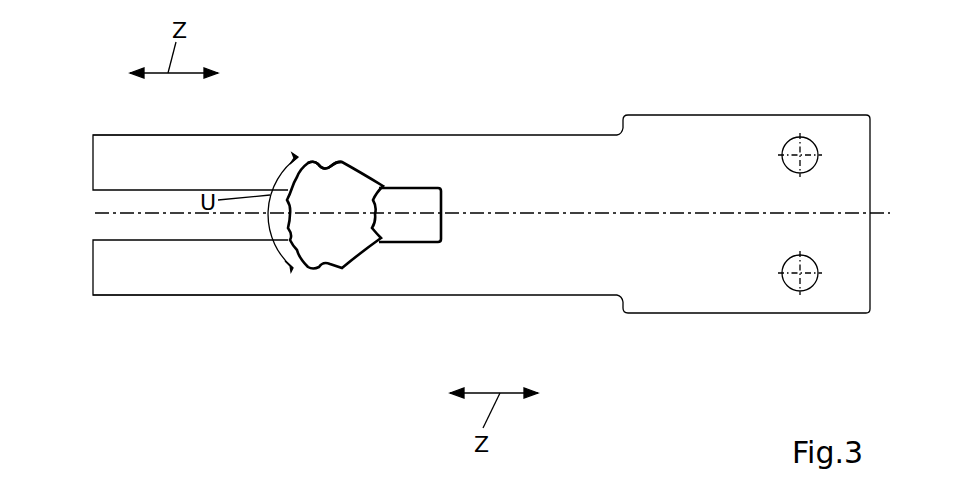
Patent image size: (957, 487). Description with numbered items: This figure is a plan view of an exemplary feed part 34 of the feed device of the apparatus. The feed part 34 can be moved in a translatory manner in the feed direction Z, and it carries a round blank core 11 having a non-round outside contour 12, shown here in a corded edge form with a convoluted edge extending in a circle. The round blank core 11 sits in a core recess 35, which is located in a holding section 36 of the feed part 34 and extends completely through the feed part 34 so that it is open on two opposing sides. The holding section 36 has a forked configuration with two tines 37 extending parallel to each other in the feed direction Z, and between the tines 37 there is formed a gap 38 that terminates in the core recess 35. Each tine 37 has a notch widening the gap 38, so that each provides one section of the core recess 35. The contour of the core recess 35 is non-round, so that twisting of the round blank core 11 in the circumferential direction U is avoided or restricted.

The round blank core 11 is at (340, 240).
The non-round contour 12 is at (376, 222).
The feed part 34 is at (656, 313).
The core recess 35 is at (333, 160).
The holding section 36 is at (242, 302).
The tines 37 is at (244, 147).
The gap 38 is at (114, 225).